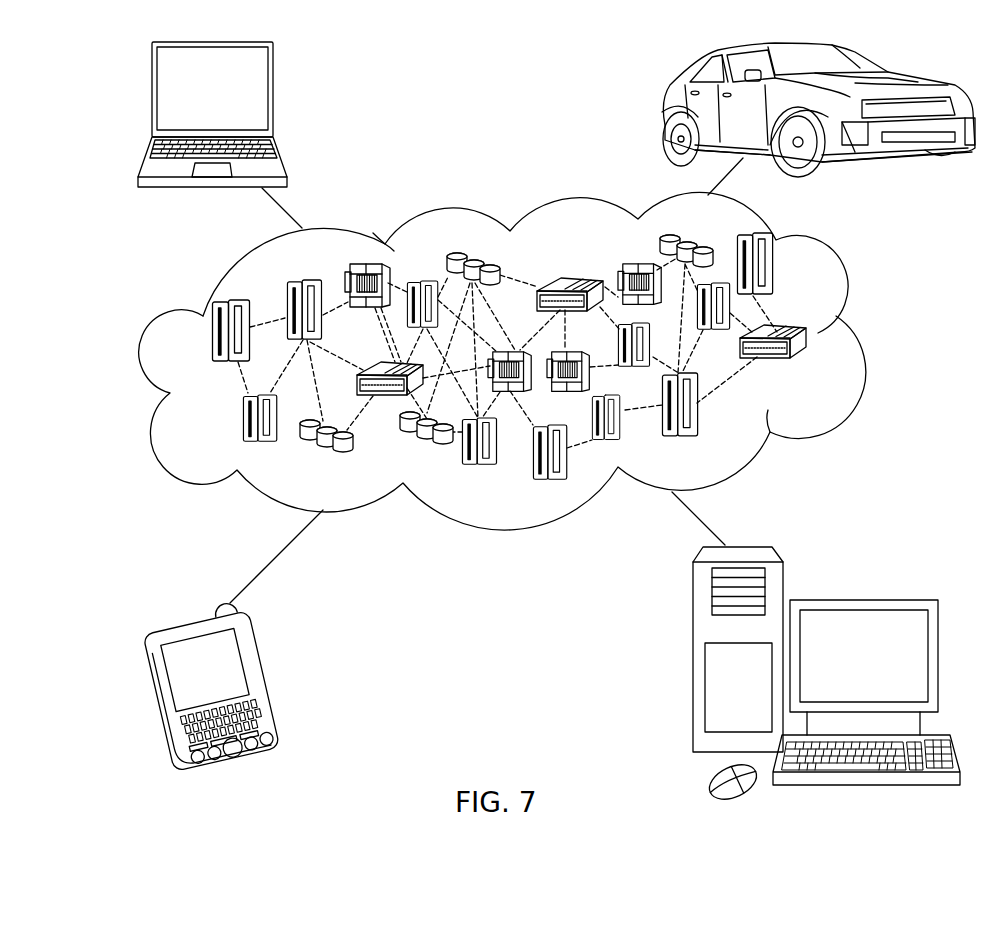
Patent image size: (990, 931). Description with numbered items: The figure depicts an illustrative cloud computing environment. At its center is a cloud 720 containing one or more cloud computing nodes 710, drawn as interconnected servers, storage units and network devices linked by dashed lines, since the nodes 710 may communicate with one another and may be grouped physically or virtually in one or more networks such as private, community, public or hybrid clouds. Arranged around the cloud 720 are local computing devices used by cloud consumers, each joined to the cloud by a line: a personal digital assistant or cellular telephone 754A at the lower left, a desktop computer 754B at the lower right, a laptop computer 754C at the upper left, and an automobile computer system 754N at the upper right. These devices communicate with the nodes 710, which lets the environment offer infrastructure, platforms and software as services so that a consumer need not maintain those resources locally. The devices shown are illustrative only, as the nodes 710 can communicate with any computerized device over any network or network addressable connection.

The cloud computing nodes 710 is at (810, 368).
The cloud 720 is at (860, 341).
The personal digital assistant (PDA) or cellular telephone 754A is at (266, 683).
The desktop computer 754B is at (862, 598).
The laptop computer 754C is at (273, 97).
The automobile computer system 754N is at (665, 112).